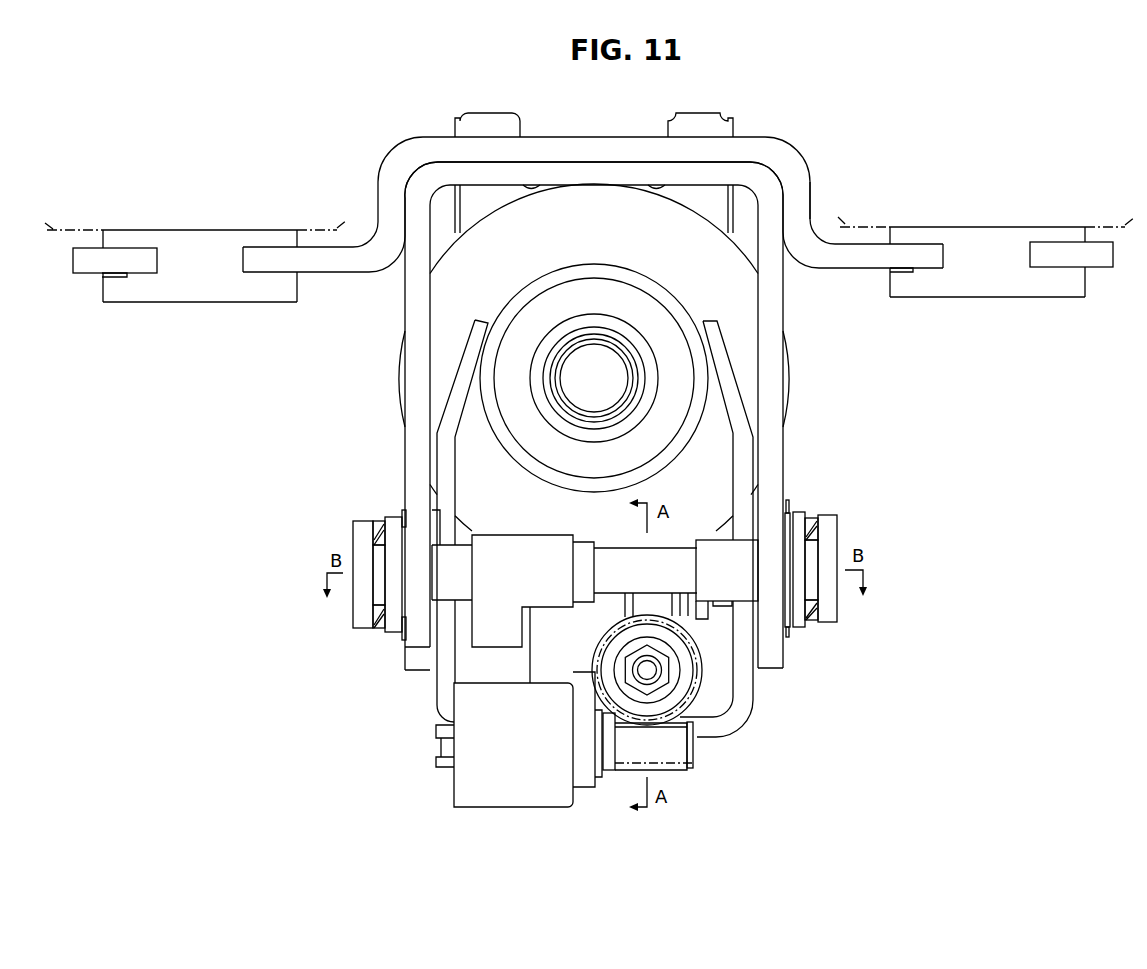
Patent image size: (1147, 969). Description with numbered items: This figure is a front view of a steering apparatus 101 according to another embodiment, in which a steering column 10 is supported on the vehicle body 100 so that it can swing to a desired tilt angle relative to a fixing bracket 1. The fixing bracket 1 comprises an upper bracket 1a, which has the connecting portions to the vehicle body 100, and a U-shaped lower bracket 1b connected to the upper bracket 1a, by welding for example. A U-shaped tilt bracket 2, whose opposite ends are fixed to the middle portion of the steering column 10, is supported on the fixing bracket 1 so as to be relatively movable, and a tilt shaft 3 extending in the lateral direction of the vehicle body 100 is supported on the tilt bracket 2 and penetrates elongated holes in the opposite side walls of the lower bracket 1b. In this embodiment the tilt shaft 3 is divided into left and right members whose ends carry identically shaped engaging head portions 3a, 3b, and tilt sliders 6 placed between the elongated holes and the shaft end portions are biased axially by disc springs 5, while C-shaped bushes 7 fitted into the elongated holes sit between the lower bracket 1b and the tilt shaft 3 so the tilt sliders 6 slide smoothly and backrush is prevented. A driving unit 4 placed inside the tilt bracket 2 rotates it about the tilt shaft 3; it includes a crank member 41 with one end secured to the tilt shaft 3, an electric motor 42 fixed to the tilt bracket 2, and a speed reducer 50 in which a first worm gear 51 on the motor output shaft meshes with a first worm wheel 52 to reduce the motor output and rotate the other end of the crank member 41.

The fixing bracket 1 is at (792, 141).
The upper bracket 1a is at (800, 197).
The lower bracket 1b is at (772, 282).
The tilt bracket 2 is at (447, 683).
The tilt shaft 3 is at (447, 560).
The engaging head portion 3a is at (358, 606).
The engaging head portion 3b is at (830, 605).
The driving unit 4 is at (428, 735).
The disc spring 5 is at (376, 520).
The tilt slider 6 is at (398, 633).
The bush 7 is at (403, 634).
The steering column 10 is at (683, 300).
The crank member 41 is at (508, 560).
The electric motor 42 is at (480, 782).
The speed reducer 50 is at (710, 678).
The first worm gear 51 is at (673, 745).
The first worm wheel 52 is at (678, 697).
The vehicle body 100 is at (70, 226).
The steering apparatus 101 is at (919, 444).